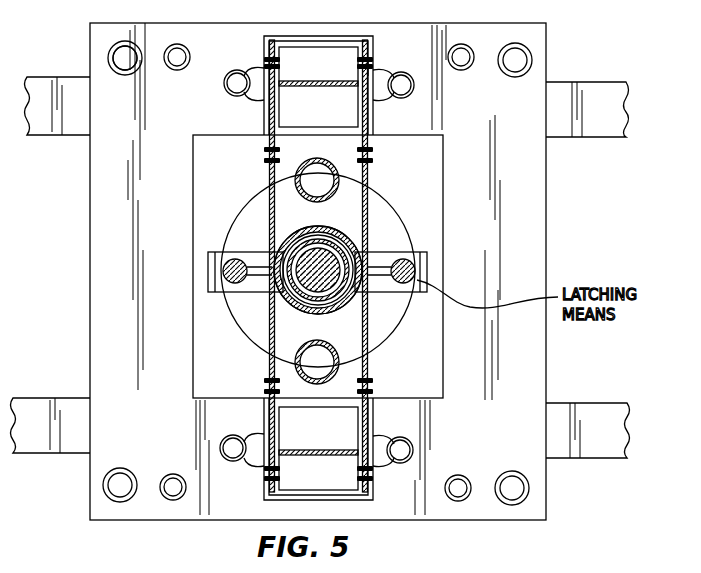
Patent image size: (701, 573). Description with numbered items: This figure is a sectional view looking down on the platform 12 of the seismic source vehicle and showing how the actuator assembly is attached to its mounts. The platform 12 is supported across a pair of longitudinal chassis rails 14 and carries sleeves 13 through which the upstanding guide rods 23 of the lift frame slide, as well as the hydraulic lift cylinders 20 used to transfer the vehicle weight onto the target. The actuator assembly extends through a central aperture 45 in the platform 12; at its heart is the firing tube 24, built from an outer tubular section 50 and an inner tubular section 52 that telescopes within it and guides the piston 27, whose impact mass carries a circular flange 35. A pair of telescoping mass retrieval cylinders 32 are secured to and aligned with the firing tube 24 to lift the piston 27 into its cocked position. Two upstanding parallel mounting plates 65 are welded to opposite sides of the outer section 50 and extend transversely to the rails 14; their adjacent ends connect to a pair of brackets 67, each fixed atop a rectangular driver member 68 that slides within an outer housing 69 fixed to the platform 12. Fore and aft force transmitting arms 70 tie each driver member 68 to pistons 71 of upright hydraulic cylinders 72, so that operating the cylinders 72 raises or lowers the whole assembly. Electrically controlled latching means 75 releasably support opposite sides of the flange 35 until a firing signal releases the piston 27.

The platform 12 is at (533, 380).
The sleeves 13 is at (108, 57).
The longitudinal chassis rails 14 is at (48, 77).
The hydraulic lift cylinders 20 is at (178, 44).
The guide rods 23 is at (125, 52).
The firing tube 24 is at (302, 312).
The piston 27 is at (282, 254).
The hydraulic mass retrieval cylinders 32 is at (329, 154).
The circular flange 35 is at (396, 327).
The central aperture 45 is at (194, 161).
The outer tubular section 50 is at (349, 234).
The inner tubular section 52 is at (346, 247).
The mounting plates 65 is at (272, 206).
The brackets 67 is at (264, 103).
The driver members 68 is at (340, 41).
The outer housings 69 is at (300, 36).
The force transmitting arms 70 is at (256, 70).
The pistons 71 is at (372, 72).
The hydraulic cylinders 72 is at (404, 74).
The latching means 75 is at (210, 270).